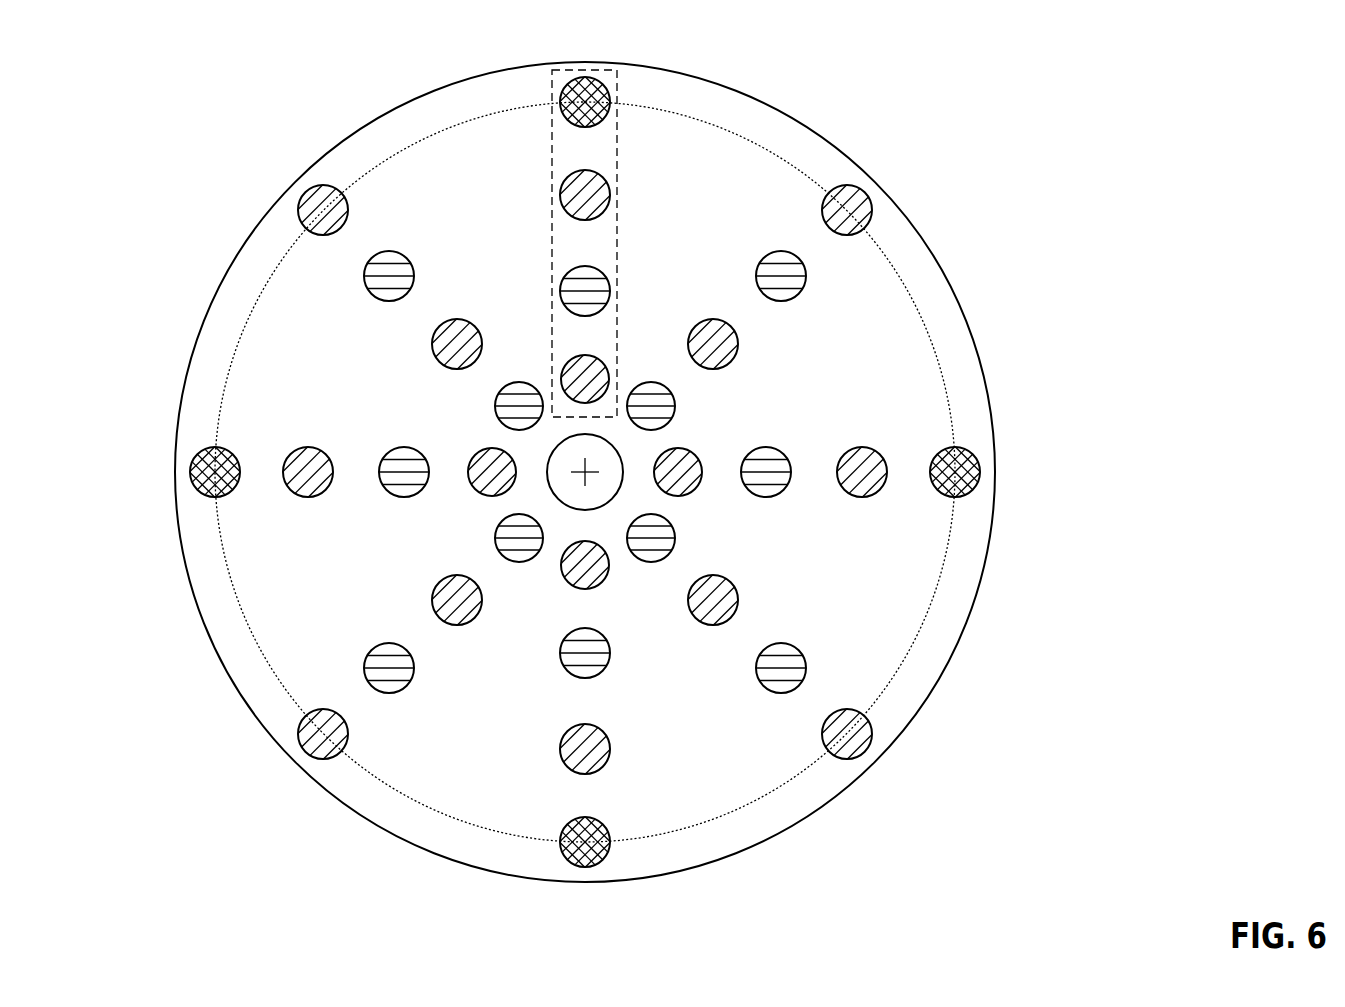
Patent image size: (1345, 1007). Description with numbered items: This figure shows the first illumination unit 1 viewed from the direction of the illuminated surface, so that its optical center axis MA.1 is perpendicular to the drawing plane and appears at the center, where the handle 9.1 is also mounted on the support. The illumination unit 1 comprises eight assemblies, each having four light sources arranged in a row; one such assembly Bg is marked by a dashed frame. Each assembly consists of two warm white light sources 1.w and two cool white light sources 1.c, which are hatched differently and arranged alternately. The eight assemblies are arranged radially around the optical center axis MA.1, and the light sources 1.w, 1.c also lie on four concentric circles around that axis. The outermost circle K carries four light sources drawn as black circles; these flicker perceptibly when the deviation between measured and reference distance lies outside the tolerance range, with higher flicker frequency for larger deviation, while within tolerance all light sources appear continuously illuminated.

The first illumination unit 1 is at (554, 481).
The warm white light source 1.w is at (387, 279).
The cool white light source 1.c is at (307, 465).
The assembly Bg is at (618, 144).
The outermost circle K is at (920, 311).
The handle 9.1 is at (578, 474).
The optical center axis MA.1 is at (580, 474).